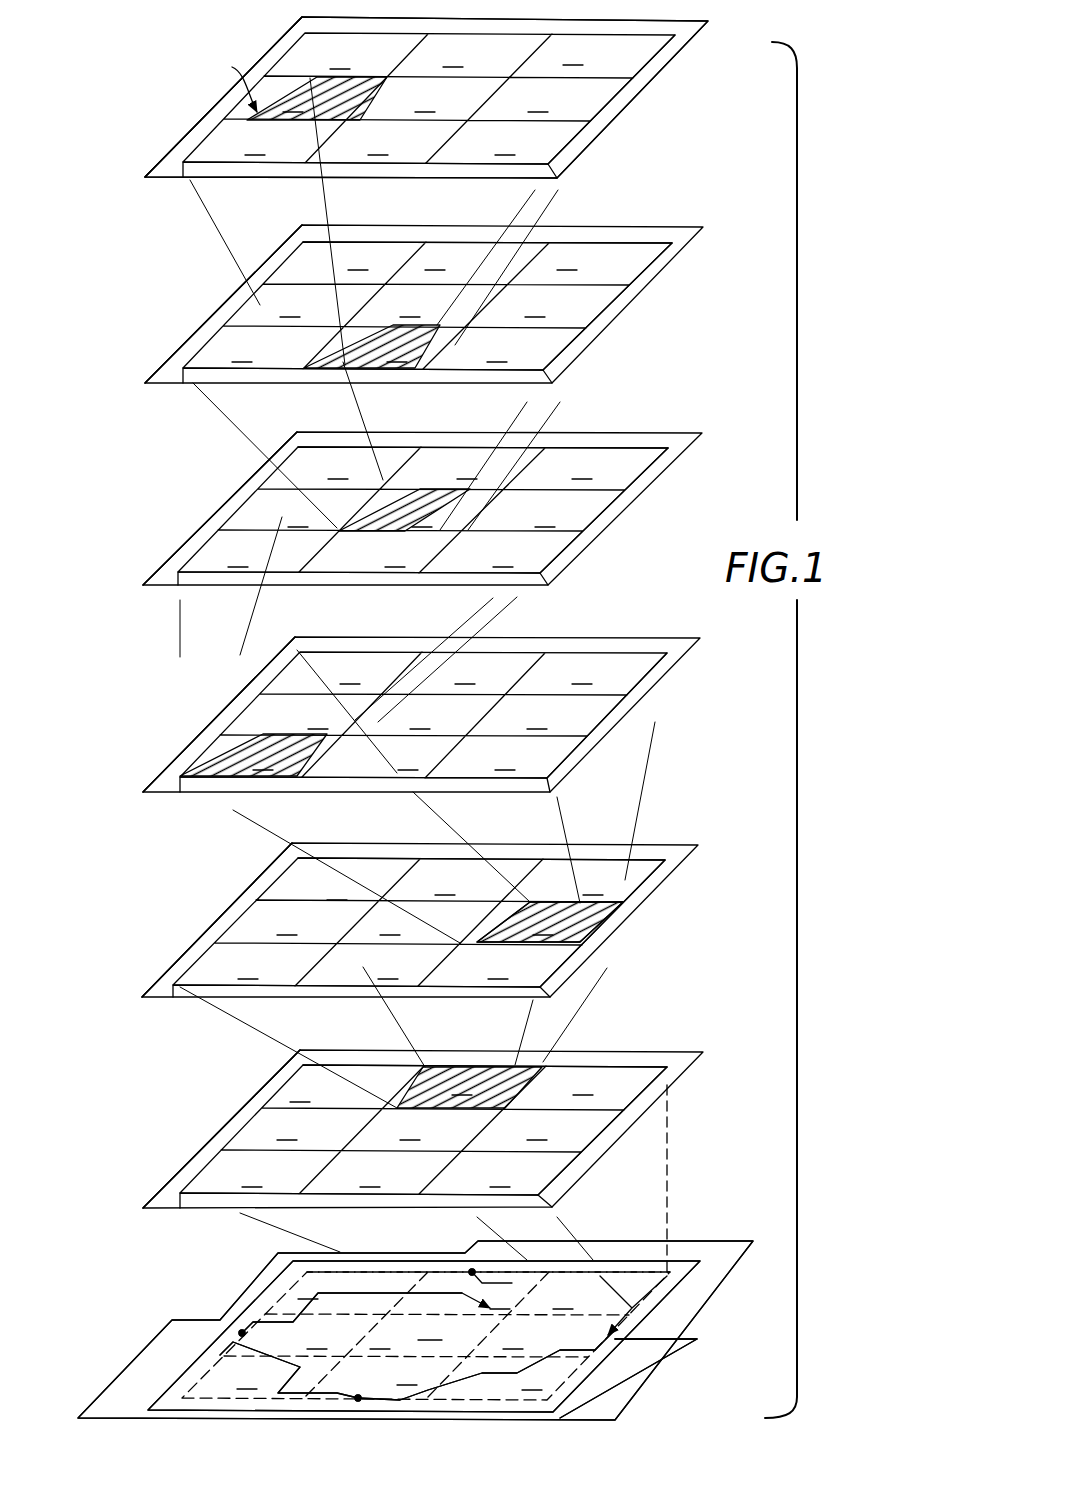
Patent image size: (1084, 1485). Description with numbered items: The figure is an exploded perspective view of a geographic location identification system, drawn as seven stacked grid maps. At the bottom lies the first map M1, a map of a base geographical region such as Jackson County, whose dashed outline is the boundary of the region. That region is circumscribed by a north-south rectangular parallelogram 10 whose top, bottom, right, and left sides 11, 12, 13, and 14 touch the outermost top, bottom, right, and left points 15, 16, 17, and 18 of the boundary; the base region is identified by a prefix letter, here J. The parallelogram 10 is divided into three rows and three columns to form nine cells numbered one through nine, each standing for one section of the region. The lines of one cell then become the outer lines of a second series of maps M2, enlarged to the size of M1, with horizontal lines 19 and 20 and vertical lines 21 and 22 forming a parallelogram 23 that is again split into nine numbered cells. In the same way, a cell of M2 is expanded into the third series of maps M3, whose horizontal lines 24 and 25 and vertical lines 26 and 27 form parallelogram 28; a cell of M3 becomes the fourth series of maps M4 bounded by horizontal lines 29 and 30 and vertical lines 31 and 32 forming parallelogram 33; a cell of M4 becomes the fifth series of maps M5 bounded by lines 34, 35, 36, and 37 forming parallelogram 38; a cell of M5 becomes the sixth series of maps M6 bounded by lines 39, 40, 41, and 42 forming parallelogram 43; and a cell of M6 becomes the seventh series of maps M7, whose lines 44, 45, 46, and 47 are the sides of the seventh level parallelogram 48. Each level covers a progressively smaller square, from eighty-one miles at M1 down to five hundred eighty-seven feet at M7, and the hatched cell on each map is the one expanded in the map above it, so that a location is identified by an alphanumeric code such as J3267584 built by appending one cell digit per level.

The rectangular parallelogram 10 is at (187, 1393).
The top side 11 is at (378, 1272).
The bottom side 12 is at (553, 1398).
The right side 13 is at (587, 1373).
The left side 14 is at (220, 1355).
The outermost top point 15 is at (472, 1272).
The outermost bottom point 16 is at (372, 1380).
The outermost right point 17 is at (663, 1326).
The outermost left point 18 is at (242, 1333).
The horizontal line 19 is at (610, 1063).
The horizontal line 20 is at (367, 1195).
The vertical line 21 is at (567, 1172).
The vertical line 22 is at (205, 1163).
The parallelogram 23 is at (240, 1120).
The horizontal line 24 is at (470, 860).
The horizontal line 25 is at (320, 992).
The vertical line 26 is at (647, 883).
The vertical line 27 is at (197, 953).
The parallelogram 28 is at (242, 900).
The horizontal line 29 is at (525, 897).
The horizontal line 30 is at (360, 780).
The vertical line 31 is at (623, 705).
The vertical line 32 is at (273, 672).
The parallelogram 33 is at (240, 710).
The horizontal line 34 is at (618, 447).
The horizontal line 35 is at (380, 573).
The vertical line 36 is at (615, 505).
The vertical line 37 is at (230, 515).
The parallelogram 38 is at (213, 525).
The horizontal line 39 is at (453, 240).
The horizontal line 40 is at (437, 372).
The vertical line 41 is at (627, 295).
The vertical line 42 is at (283, 255).
The parallelogram 43 is at (240, 297).
The horizontal line 44 is at (682, 17).
The horizontal line 45 is at (423, 163).
The vertical line 46 is at (617, 90).
The vertical line 47 is at (282, 58).
The seventh level rectangular parallelogram 48 is at (213, 127).
The first map M1 is at (687, 1250).
The second series of maps M2 is at (672, 1082).
The third series of maps M3 is at (670, 840).
The fourth series of maps M4 is at (672, 672).
The fifth series of maps M5 is at (673, 460).
The sixth series of maps M6 is at (657, 262).
The seventh series of maps M7 is at (672, 57).